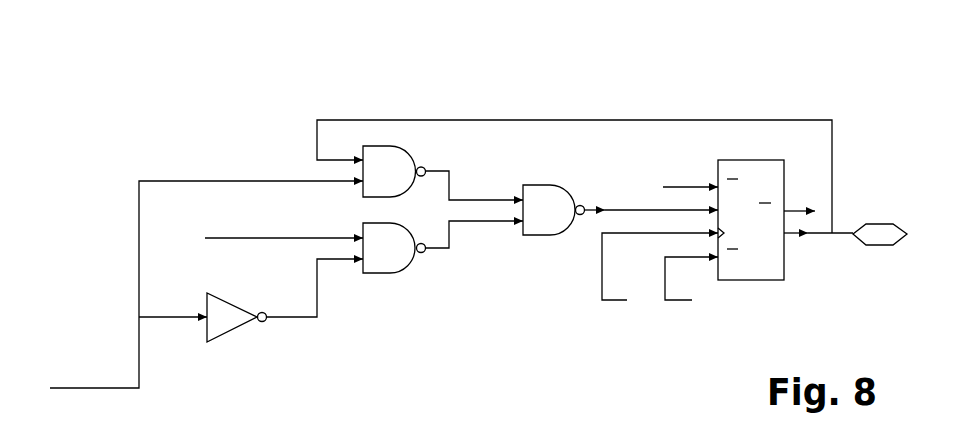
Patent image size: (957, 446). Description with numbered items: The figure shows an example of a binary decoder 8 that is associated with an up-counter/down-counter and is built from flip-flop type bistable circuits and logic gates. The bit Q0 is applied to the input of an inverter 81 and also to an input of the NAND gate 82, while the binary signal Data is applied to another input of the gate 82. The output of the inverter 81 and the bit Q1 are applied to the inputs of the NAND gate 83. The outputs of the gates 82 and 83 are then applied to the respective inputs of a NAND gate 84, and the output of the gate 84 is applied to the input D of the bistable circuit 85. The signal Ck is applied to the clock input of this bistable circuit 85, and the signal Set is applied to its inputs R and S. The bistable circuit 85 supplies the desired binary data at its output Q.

The binary decoder 8 is at (502, 315).
The inverter 81 is at (225, 322).
The NAND gate 82 is at (380, 146).
The NAND gate 83 is at (380, 273).
The NAND gate 84 is at (537, 235).
The bistable circuit 85 is at (757, 280).